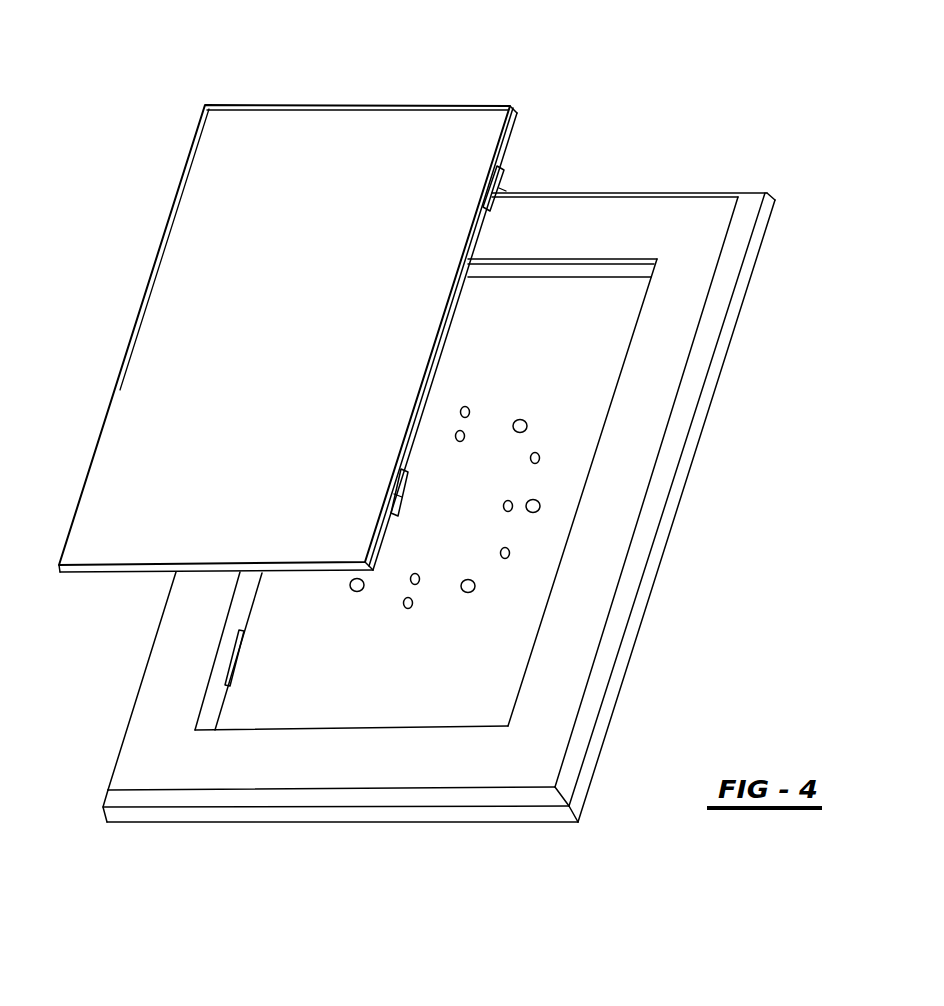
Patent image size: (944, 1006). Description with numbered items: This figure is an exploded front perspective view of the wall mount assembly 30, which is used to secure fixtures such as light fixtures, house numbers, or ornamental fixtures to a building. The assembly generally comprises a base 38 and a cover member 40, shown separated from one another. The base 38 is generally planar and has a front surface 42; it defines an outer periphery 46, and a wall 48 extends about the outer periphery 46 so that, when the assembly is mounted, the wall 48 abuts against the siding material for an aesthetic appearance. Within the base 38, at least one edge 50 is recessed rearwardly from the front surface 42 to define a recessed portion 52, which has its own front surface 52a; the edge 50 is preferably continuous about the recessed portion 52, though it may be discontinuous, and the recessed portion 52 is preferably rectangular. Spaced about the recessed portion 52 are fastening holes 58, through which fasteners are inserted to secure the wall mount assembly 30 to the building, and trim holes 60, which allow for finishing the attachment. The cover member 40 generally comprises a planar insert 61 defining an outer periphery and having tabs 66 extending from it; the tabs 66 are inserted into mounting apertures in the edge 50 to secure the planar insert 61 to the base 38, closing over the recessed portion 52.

The wall mount assembly 30 is at (468, 451).
The base 38 is at (706, 222).
The cover member 40 is at (288, 287).
The front surface 42 is at (550, 698).
The outer periphery 46 is at (702, 270).
The wall 48 is at (703, 347).
The edge 50 is at (622, 262).
The recessed portion 52 is at (570, 410).
The front surface 52a is at (578, 377).
The fastening holes 58 is at (476, 586).
The trim holes 60 is at (541, 459).
The planar insert 61 is at (349, 155).
The tabs 66 is at (504, 170).